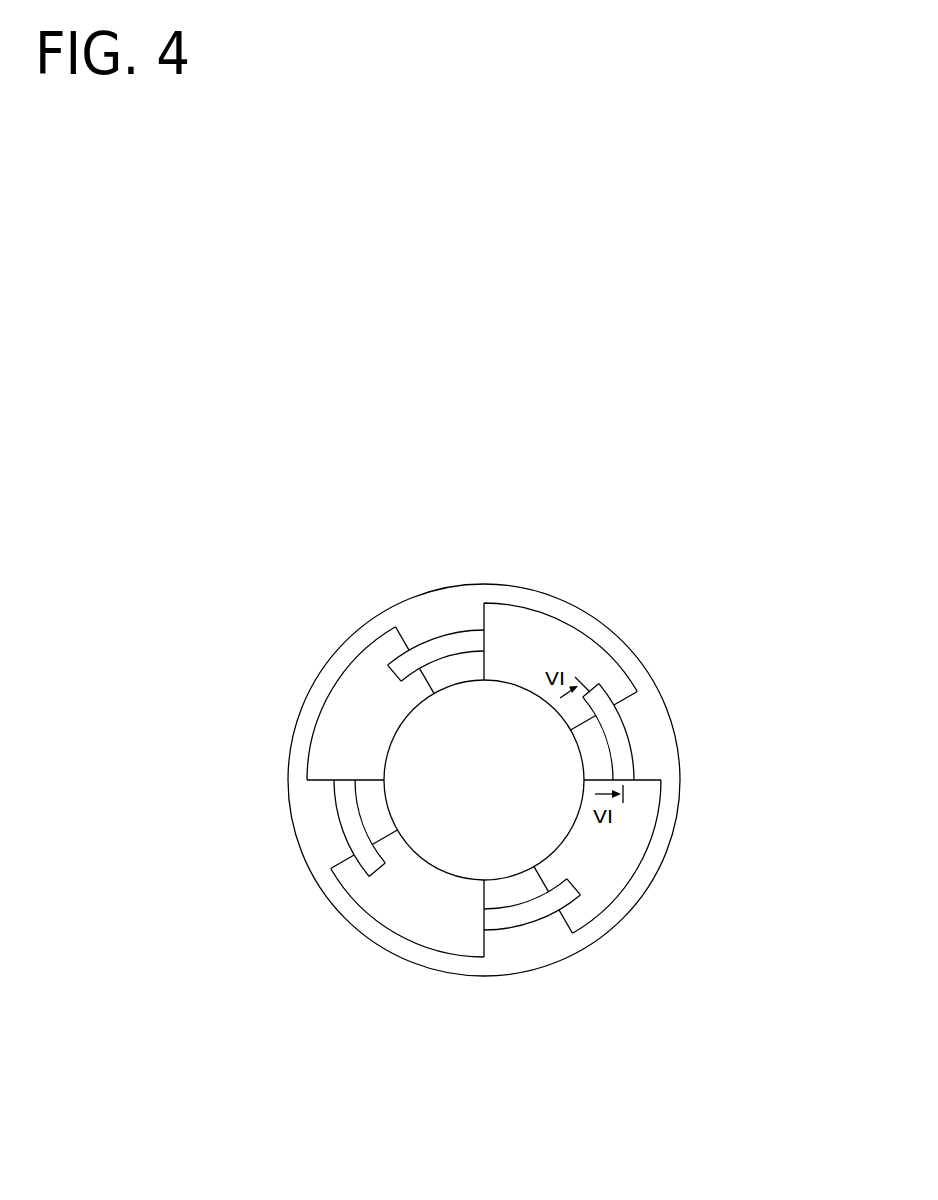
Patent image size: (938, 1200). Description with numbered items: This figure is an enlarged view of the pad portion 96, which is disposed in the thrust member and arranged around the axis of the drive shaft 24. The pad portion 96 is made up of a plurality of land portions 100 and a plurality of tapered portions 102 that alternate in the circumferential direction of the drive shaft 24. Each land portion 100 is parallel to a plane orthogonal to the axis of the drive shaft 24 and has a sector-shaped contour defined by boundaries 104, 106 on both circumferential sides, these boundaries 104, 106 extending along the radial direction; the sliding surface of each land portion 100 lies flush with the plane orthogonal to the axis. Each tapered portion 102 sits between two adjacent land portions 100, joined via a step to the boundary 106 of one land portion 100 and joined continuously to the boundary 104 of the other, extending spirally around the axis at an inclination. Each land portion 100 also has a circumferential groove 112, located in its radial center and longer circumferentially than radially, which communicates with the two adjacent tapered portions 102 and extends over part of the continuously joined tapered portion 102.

The pad portion 96 is at (622, 628).
The land portion 100 is at (439, 606).
The tapered portion 102 is at (566, 636).
The boundary 104 is at (645, 698).
The circumferential groove 112 is at (606, 716).
The boundary 106 is at (658, 770).
The drive shaft 24 is at (568, 840).